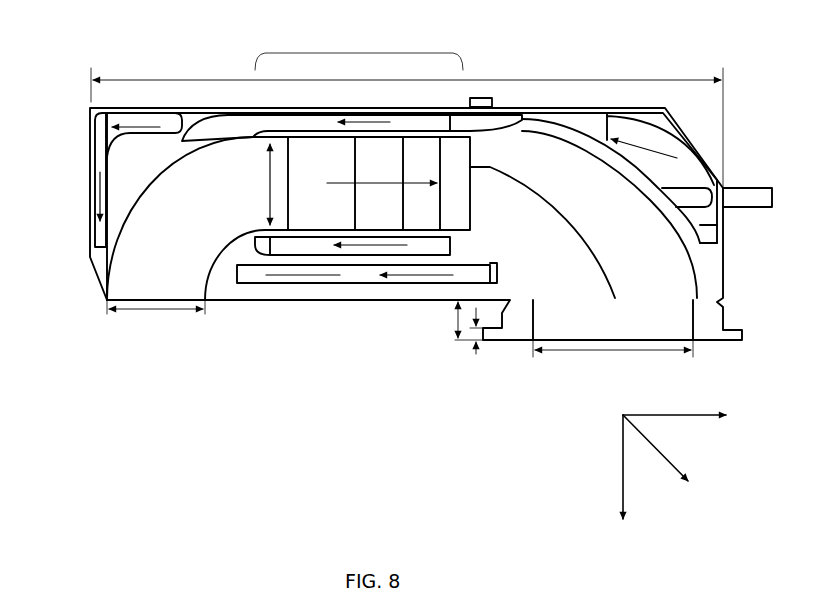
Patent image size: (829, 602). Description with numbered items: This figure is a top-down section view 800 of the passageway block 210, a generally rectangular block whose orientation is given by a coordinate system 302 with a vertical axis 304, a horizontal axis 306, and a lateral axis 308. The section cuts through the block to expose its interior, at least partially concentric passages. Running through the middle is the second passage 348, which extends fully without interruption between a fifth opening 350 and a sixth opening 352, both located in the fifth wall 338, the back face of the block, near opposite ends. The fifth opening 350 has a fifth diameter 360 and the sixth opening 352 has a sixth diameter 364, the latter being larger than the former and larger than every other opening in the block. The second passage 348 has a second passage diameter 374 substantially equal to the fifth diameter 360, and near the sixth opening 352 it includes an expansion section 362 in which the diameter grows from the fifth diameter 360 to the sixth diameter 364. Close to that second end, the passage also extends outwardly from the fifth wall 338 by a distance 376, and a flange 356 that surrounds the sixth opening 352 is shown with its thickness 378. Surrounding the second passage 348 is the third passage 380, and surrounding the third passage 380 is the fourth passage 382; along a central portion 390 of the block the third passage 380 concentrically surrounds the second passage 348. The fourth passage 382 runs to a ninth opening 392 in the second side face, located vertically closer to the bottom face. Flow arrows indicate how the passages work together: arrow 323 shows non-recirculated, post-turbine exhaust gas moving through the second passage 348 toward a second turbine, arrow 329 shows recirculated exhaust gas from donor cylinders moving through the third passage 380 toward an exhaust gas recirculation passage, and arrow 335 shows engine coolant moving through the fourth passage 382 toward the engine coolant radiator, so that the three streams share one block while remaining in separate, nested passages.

The passageway block 210 is at (64, 232).
The top-down section view 800 is at (717, 52).
The coordinate system 302 is at (647, 467).
The vertical axis 304 is at (680, 460).
The horizontal axis 306 is at (700, 420).
The lateral axis 308 is at (619, 488).
The arrow 323 is at (340, 184).
The arrow 329 is at (368, 112).
The arrow 335 is at (97, 131).
The fifth wall 338 is at (353, 316).
The second passage 348 is at (208, 262).
The fifth opening 350 is at (177, 326).
The sixth opening 352 is at (618, 358).
The flange 356 is at (742, 337).
The fifth diameter 360 is at (158, 310).
The expansion section 362 is at (657, 262).
The sixth diameter 364 is at (577, 358).
The second passage diameter 374 is at (268, 183).
The distance 376 is at (452, 326).
The thickness 378 is at (477, 346).
The third passage 380 is at (458, 114).
The fourth passage 382 is at (726, 205).
The central portion 390 is at (359, 48).
The ninth opening 392 is at (780, 196).